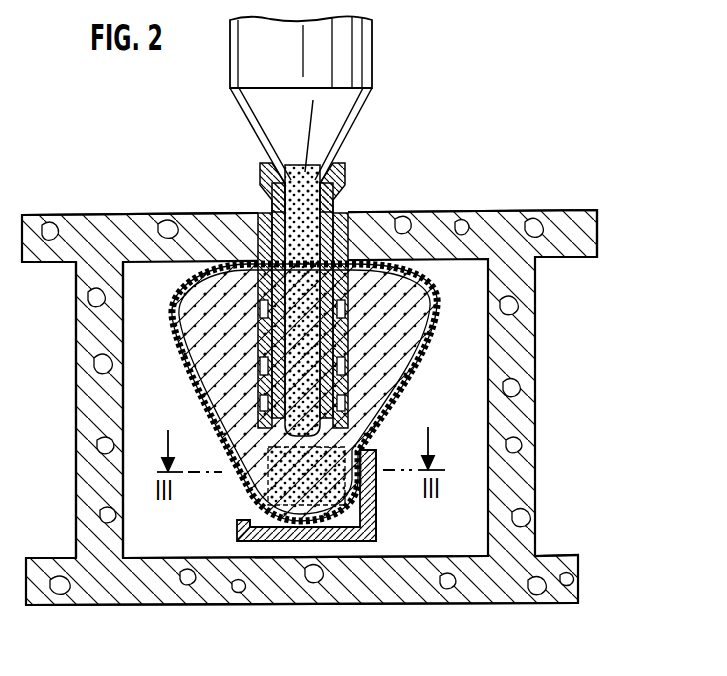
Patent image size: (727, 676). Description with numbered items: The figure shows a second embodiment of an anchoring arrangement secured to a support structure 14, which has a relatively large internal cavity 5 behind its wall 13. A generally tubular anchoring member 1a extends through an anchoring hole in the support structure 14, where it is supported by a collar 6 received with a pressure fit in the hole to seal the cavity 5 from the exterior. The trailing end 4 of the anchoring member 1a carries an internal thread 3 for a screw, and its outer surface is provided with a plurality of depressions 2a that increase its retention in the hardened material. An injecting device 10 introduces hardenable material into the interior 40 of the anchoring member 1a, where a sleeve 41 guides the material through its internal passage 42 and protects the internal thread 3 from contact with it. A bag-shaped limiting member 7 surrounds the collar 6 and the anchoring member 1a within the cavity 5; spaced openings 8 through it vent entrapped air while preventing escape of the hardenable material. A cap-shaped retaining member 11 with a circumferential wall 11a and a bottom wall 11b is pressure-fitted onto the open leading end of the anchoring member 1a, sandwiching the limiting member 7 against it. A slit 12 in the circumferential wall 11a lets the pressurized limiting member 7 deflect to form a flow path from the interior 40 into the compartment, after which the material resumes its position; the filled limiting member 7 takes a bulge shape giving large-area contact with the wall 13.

The anchoring member 1a is at (343, 362).
The depressions 2a is at (352, 290).
The internal thread 3 is at (236, 212).
The trailing end 4 is at (382, 212).
The internal cavity 5 is at (150, 535).
The collar 6 is at (343, 212).
The bag-shaped limiting member 7 is at (412, 374).
The openings 8 is at (385, 417).
The injecting device 10 is at (340, 50).
The cap-shaped retaining member 11 is at (315, 548).
The circumferential wall 11a is at (370, 515).
The bottom wall 11b is at (348, 542).
The slit 12 is at (224, 536).
The wall 13 is at (140, 215).
The support structure 14 is at (557, 207).
The interior 40 is at (248, 478).
The sleeve 41 is at (285, 312).
The internal passage 42 is at (292, 288).